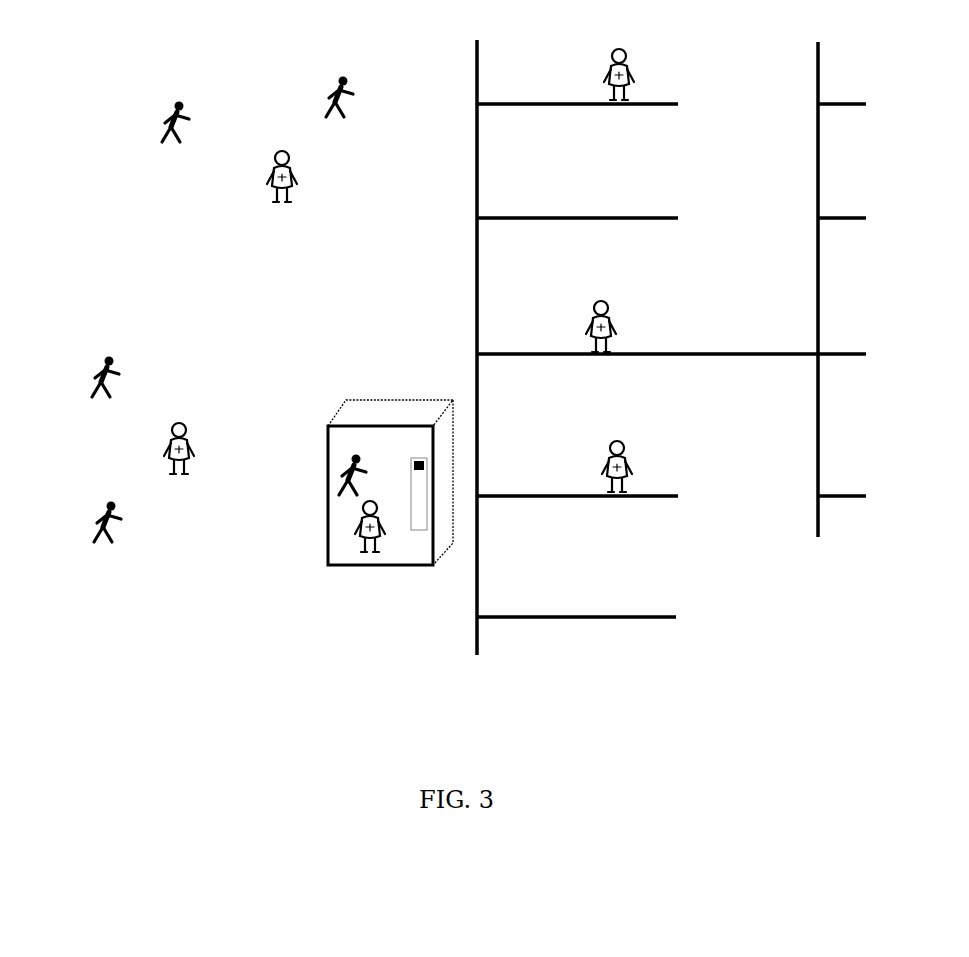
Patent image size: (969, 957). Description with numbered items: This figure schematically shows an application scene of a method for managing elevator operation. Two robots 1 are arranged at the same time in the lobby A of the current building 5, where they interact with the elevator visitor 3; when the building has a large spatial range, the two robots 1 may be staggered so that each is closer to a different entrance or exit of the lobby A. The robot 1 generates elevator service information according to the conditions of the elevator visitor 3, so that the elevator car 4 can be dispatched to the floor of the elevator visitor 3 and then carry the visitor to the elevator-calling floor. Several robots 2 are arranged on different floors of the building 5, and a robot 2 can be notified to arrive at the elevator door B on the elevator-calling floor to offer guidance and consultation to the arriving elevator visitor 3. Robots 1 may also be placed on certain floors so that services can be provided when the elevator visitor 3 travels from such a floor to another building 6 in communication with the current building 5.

The robot 1 is at (275, 176).
The robot 2 is at (634, 70).
The elevator visitor 3 is at (160, 124).
The elevator car 4 is at (381, 415).
The building 5 is at (475, 638).
The another building 6 is at (820, 527).
The lobby A is at (145, 262).
The elevator door B is at (479, 63).